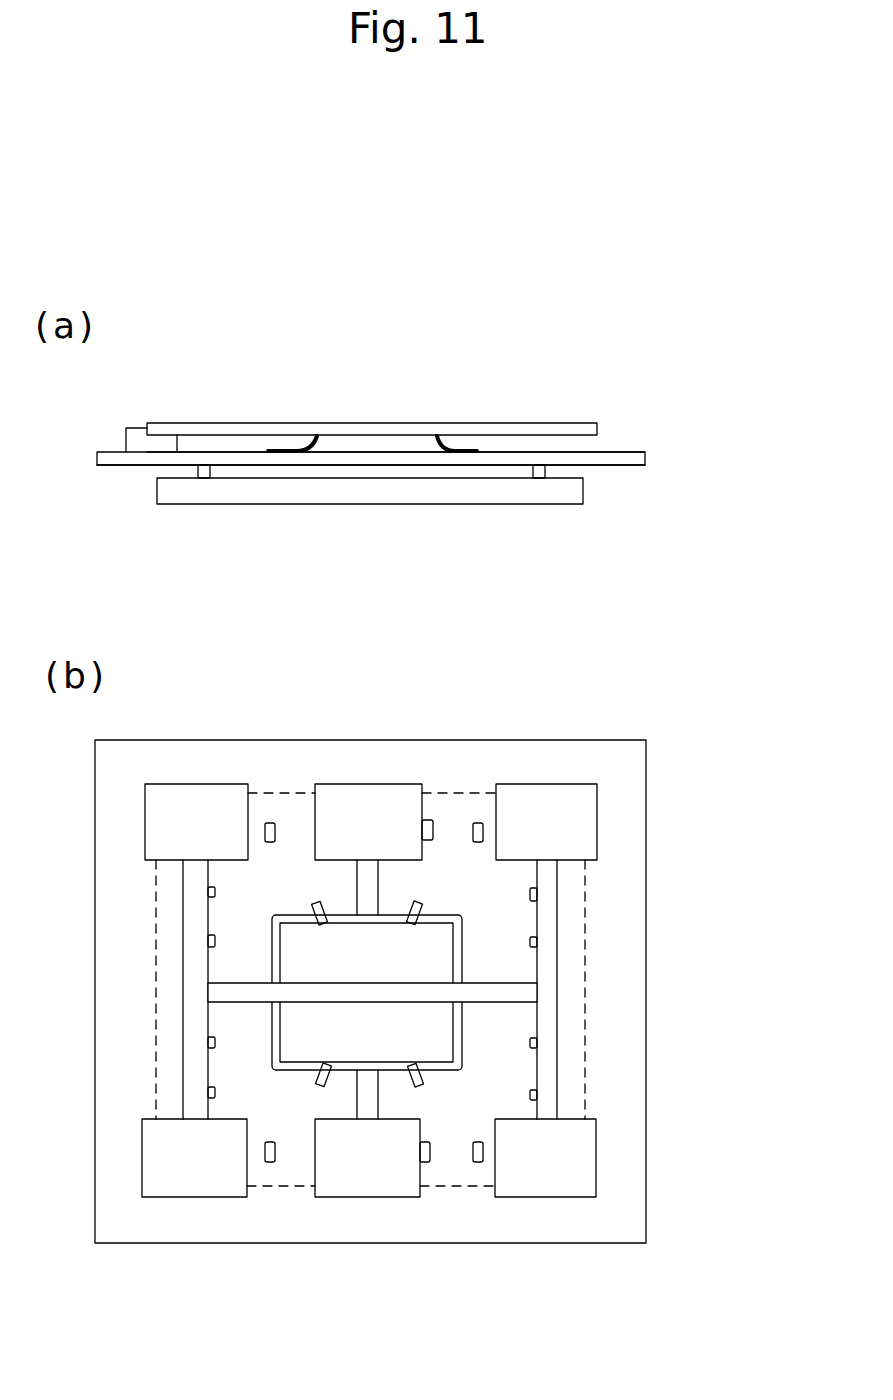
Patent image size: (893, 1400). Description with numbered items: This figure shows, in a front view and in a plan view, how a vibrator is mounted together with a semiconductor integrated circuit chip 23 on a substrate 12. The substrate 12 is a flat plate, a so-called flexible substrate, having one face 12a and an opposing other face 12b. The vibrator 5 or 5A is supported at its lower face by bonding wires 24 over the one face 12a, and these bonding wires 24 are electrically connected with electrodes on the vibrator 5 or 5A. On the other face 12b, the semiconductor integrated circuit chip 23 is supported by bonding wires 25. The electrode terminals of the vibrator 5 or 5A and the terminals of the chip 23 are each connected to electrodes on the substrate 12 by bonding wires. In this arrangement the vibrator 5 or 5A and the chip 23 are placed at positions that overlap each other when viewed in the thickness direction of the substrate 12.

The vibrator 5 is at (392, 756).
The vibrator 5A is at (378, 428).
The substrate 12 is at (645, 459).
The one face 12a is at (617, 452).
The other face 12b is at (632, 467).
The semiconductor integrated circuit chip 23 is at (417, 496).
The bonding wire 24 is at (447, 450).
The bonding wire 25 is at (198, 467).